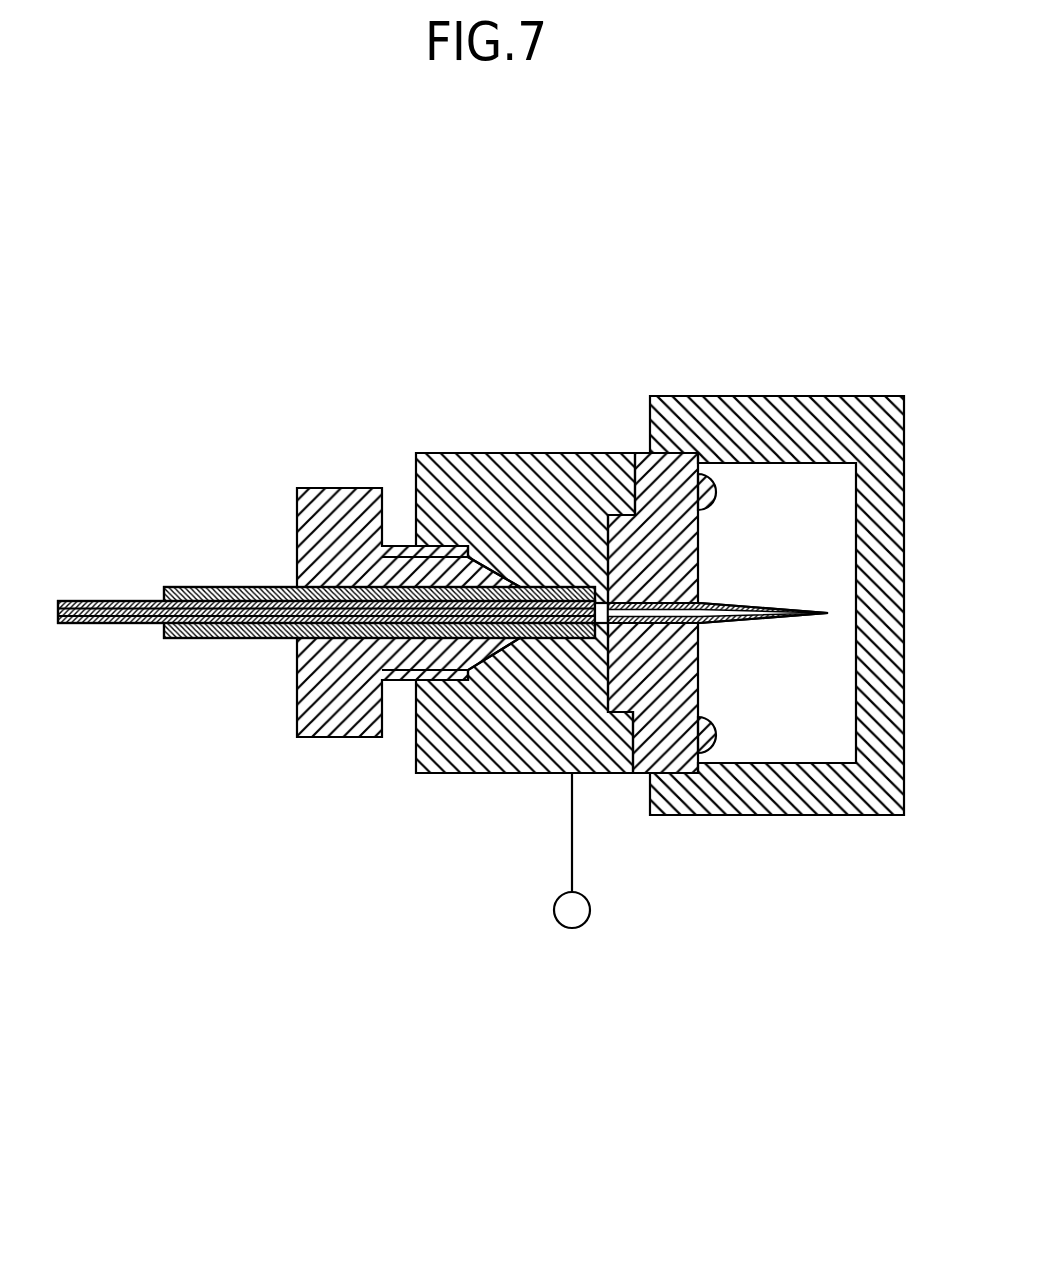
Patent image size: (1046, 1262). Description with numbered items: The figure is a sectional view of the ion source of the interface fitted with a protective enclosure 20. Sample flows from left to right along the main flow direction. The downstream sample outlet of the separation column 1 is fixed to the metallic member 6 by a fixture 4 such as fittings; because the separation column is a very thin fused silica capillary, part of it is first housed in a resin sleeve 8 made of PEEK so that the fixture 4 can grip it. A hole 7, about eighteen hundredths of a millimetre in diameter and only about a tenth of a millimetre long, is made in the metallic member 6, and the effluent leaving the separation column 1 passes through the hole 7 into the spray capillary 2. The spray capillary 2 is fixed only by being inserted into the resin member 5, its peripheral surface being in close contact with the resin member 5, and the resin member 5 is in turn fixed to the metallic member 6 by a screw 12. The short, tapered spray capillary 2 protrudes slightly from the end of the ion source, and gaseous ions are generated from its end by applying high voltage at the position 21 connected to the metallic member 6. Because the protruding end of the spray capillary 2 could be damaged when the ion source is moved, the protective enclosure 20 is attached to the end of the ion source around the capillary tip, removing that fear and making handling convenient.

The separation column 1 is at (97, 600).
The spray capillary 2 is at (750, 621).
The fixture 4 is at (323, 488).
The resin member 5 is at (660, 453).
The metallic member 6 is at (453, 775).
The hole 7 is at (597, 603).
The resin sleeve 8 is at (170, 640).
The screw 12 is at (718, 485).
The protective enclosure 20 is at (827, 815).
The position 21 is at (563, 923).